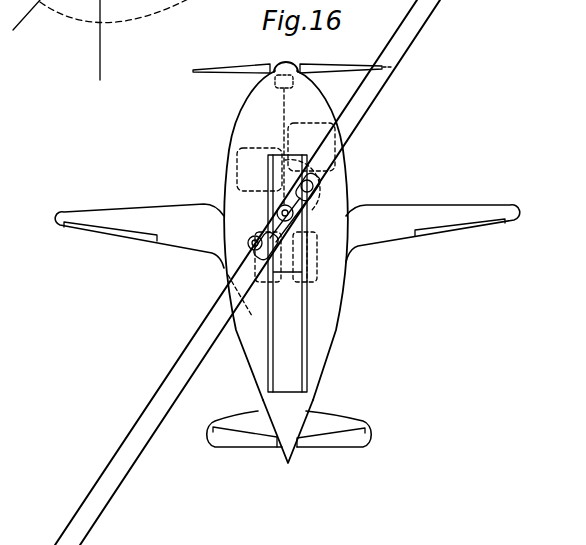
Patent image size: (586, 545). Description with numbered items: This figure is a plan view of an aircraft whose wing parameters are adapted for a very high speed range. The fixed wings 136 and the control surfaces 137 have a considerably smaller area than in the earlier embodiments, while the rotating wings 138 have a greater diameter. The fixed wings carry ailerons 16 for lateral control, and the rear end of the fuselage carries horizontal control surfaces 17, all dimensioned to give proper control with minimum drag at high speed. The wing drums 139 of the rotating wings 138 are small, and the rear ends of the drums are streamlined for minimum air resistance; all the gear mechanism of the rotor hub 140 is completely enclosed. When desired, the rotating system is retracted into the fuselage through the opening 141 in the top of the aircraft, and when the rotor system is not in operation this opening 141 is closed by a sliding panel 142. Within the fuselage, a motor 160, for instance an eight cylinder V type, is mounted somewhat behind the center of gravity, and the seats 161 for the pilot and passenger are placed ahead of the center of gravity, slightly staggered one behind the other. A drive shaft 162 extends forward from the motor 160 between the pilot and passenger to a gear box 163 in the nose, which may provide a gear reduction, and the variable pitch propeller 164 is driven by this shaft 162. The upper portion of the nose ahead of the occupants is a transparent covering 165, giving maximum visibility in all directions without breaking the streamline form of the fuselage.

The ailerons 16 is at (111, 243).
The horizontal control surfaces 17 is at (242, 447).
The fixed wings 136 is at (148, 208).
The control surfaces 137 is at (320, 430).
The rotating wings 138 is at (100, 523).
The wing drums 139 is at (318, 180).
The rotor hub 140 is at (294, 216).
The opening 141 is at (272, 170).
The sliding panel 142 is at (294, 346).
The motor 160 is at (318, 266).
The seats 161 is at (287, 136).
The drive shaft 162 is at (286, 104).
The gear box 163 is at (273, 84).
The variable pitch propeller 164 is at (245, 70).
The transparent covering 165 is at (247, 106).